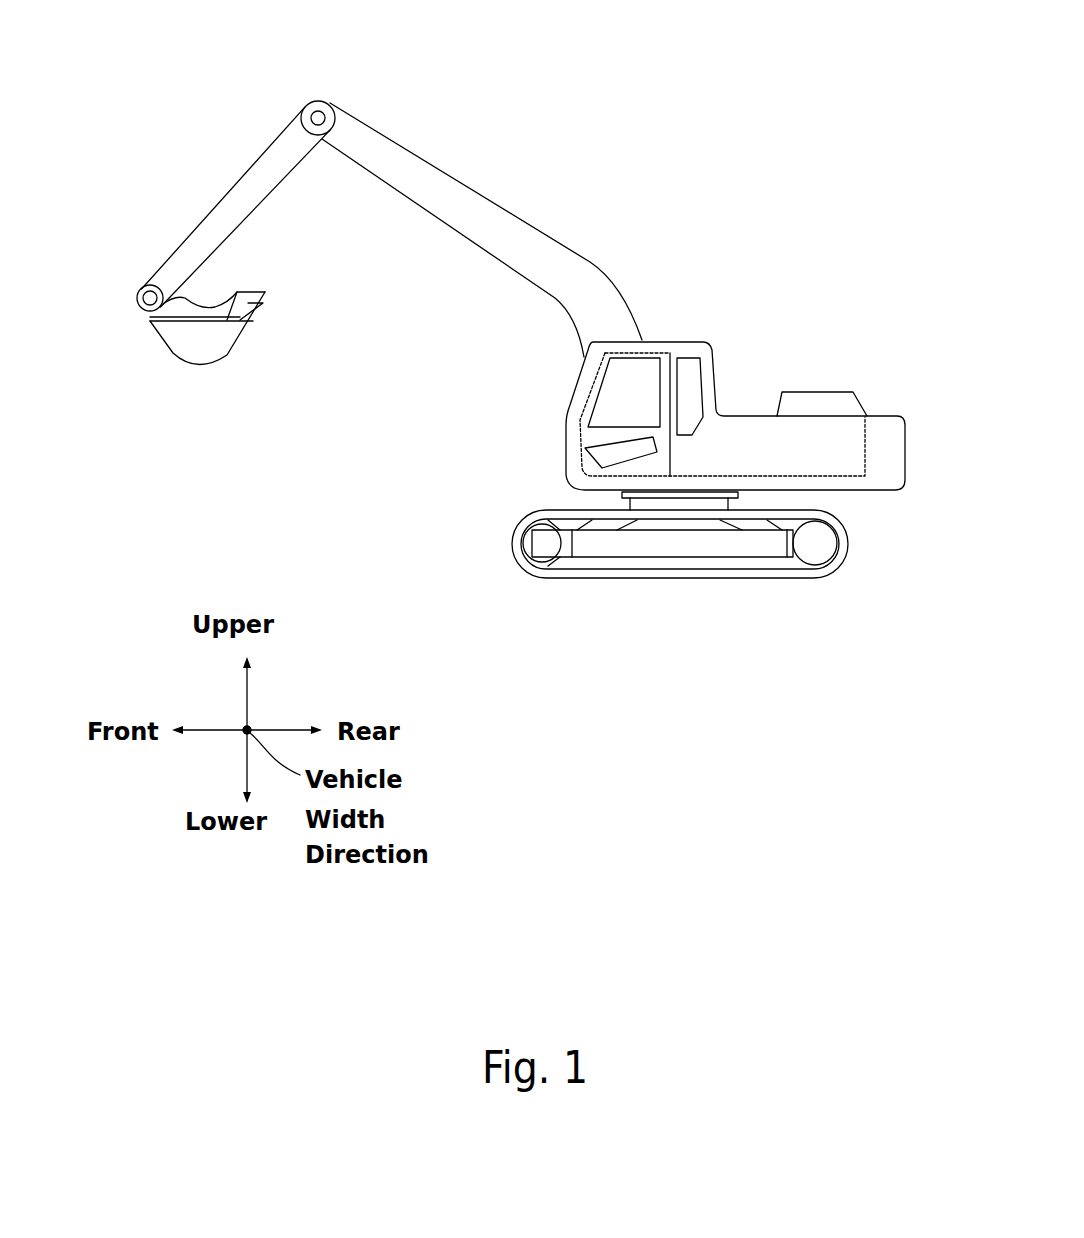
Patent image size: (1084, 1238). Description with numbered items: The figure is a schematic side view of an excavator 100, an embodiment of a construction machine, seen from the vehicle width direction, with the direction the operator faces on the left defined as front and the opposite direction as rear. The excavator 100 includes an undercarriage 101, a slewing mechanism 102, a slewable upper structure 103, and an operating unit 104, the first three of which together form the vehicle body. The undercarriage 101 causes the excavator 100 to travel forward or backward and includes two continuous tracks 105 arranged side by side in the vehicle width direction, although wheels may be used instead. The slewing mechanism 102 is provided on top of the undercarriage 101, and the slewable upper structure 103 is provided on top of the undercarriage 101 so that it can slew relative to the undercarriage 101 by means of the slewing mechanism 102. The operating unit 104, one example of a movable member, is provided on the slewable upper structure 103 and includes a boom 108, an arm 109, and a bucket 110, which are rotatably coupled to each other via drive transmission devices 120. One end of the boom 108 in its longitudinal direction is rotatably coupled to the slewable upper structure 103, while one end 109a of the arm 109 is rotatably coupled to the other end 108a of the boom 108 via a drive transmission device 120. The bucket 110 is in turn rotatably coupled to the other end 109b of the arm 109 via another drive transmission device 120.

The excavator 100 is at (787, 248).
The undercarriage 101 is at (518, 576).
The slewing mechanism 102 is at (730, 503).
The slewable upper structure 103 is at (884, 414).
The operating unit 104 is at (404, 110).
The continuous track 105 is at (750, 578).
The boom 108 is at (468, 193).
The other end of the boom 108a is at (335, 150).
The arm 109 is at (213, 200).
The one end of the arm 109a is at (290, 117).
The other end of the arm 109b is at (148, 275).
The bucket 110 is at (230, 355).
The drive transmission device 120 is at (319, 92).